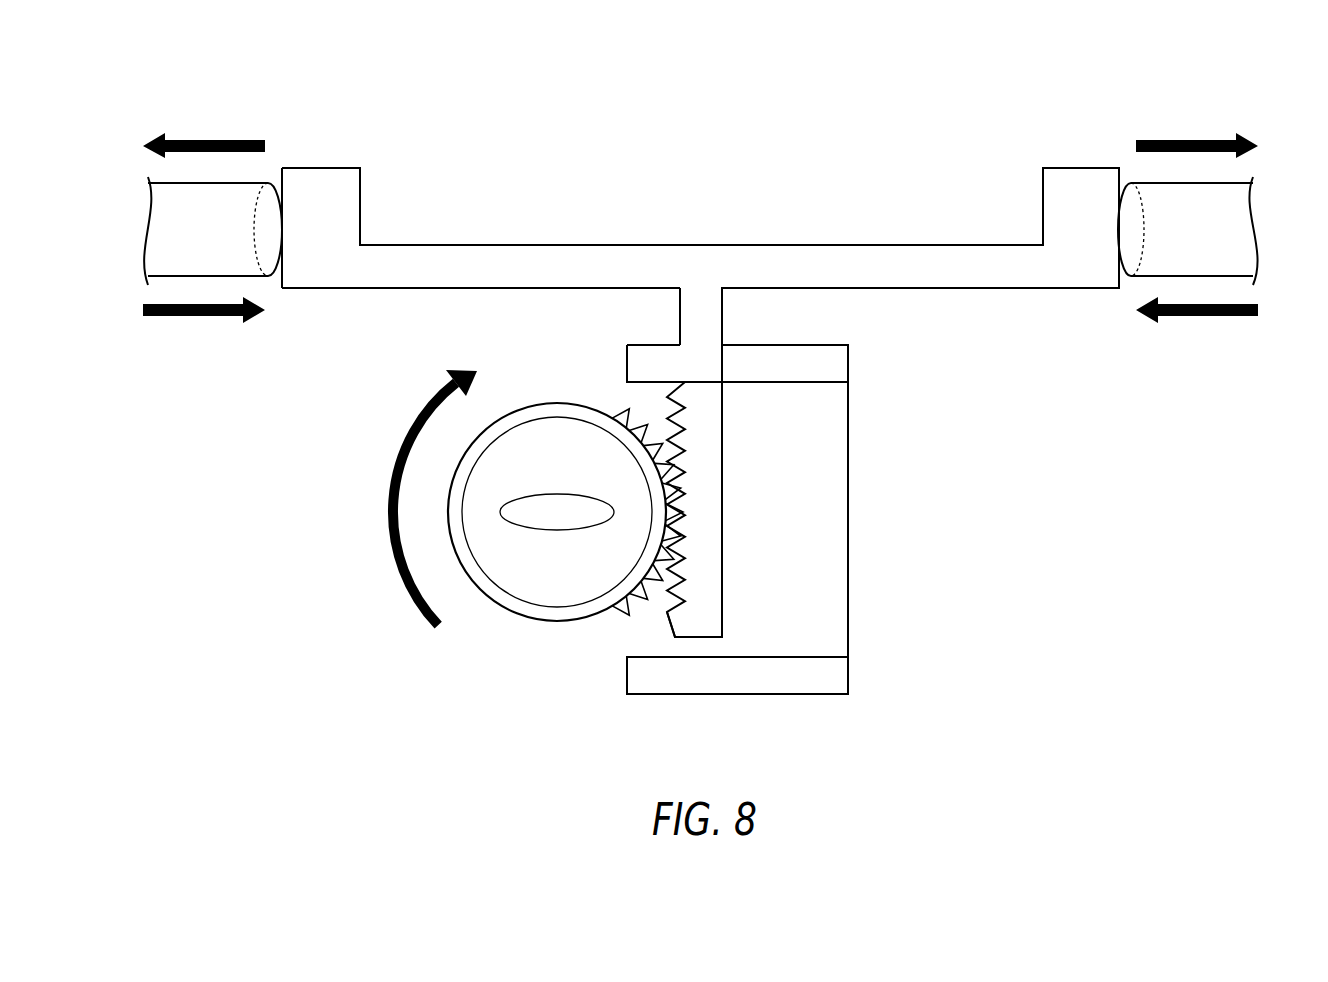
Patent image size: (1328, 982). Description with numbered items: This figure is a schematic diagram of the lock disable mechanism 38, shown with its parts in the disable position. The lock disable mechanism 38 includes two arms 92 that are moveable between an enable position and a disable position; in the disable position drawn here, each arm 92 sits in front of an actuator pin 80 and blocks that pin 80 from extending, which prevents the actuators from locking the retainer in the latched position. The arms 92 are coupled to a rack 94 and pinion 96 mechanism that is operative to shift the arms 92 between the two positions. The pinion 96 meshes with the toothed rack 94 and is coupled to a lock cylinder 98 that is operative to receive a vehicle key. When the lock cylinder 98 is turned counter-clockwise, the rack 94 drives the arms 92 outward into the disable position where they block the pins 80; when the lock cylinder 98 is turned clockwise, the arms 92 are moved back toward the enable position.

The lock disable mechanism 38 is at (888, 98).
The actuator pin 80 is at (180, 222).
The arm 92 is at (333, 168).
The rack 94 is at (722, 597).
The pinion 96 is at (623, 608).
The lock cylinder 98 is at (530, 573).